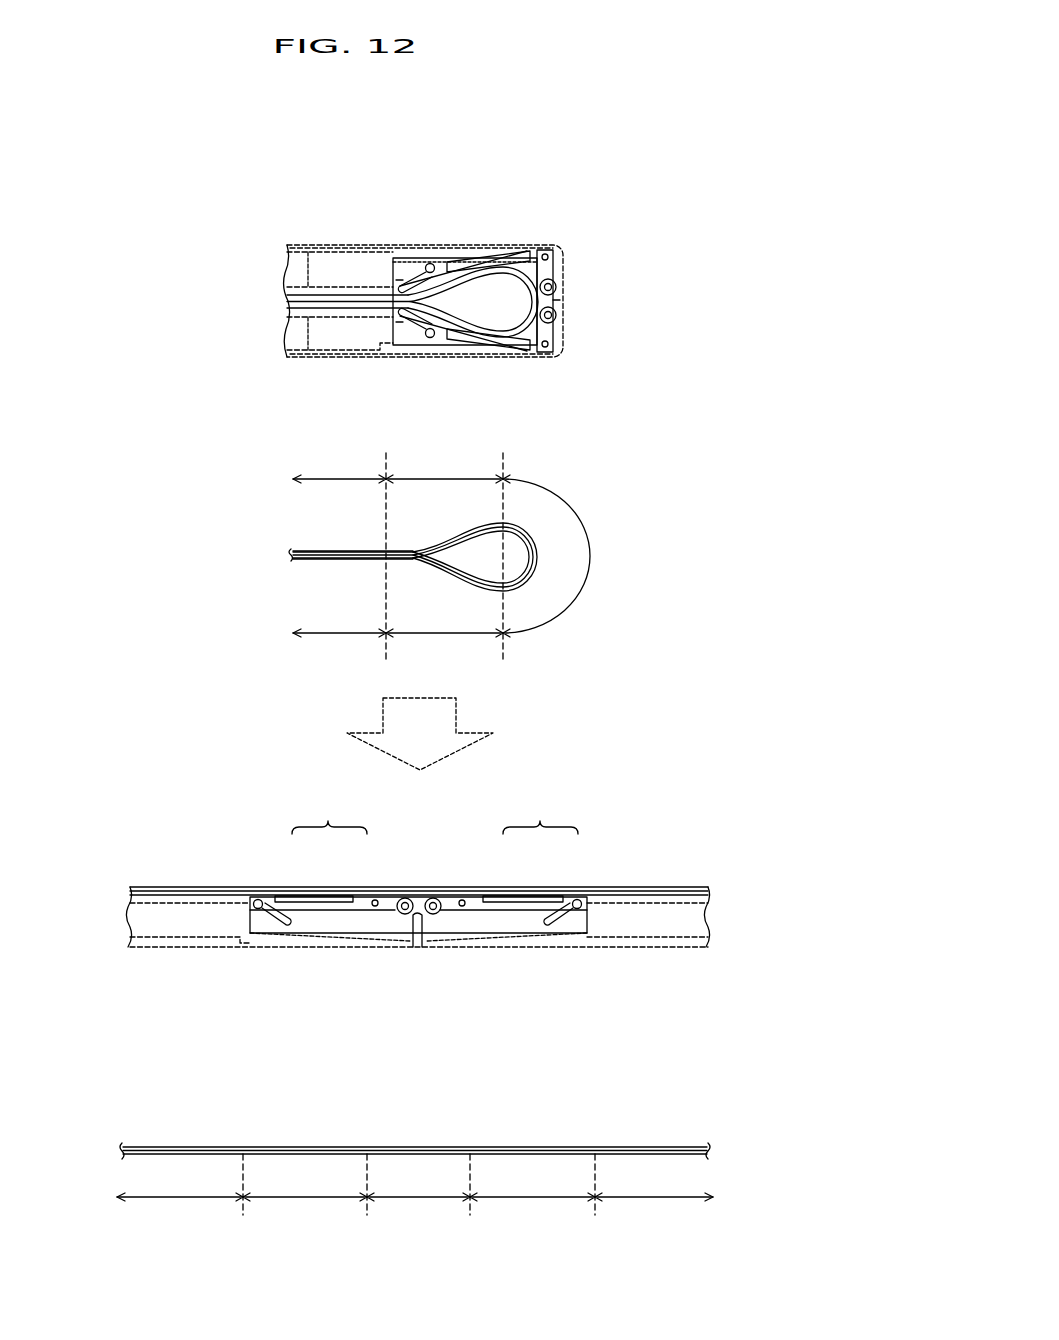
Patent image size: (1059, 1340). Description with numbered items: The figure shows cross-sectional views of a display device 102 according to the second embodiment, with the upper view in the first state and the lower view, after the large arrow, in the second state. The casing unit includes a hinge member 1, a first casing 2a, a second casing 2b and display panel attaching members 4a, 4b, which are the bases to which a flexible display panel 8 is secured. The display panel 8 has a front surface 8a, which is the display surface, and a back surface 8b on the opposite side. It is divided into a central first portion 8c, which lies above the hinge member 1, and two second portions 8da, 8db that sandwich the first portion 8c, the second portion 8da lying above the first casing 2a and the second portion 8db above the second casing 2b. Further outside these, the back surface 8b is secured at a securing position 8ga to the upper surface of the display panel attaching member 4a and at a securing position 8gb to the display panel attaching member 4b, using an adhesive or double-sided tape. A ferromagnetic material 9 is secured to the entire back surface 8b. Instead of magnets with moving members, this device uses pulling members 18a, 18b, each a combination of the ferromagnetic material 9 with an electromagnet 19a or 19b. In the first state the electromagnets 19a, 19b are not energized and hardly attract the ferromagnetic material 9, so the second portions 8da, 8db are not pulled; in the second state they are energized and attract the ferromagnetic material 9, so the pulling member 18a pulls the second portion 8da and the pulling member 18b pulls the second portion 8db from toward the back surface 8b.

The display device 102 is at (475, 267).
The hinge member 1 is at (562, 298).
The first casing 2a is at (352, 262).
The second casing 2b is at (352, 345).
The display panel attaching member 4a is at (308, 285).
The display panel attaching member 4b is at (308, 320).
The display panel 8 is at (500, 262).
The front surface 8a is at (312, 548).
The back surface 8b is at (342, 560).
The first portion 8c is at (559, 556).
The second portion 8da is at (448, 468).
The second portion 8db is at (448, 646).
The securing position 8ga is at (398, 556).
The securing position 8gb is at (343, 646).
The ferromagnetic material 9 is at (528, 250).
The pulling member 18a is at (540, 813).
The pulling member 18b is at (329, 813).
The electromagnet 19a is at (460, 266).
The electromagnet 19b is at (460, 340).